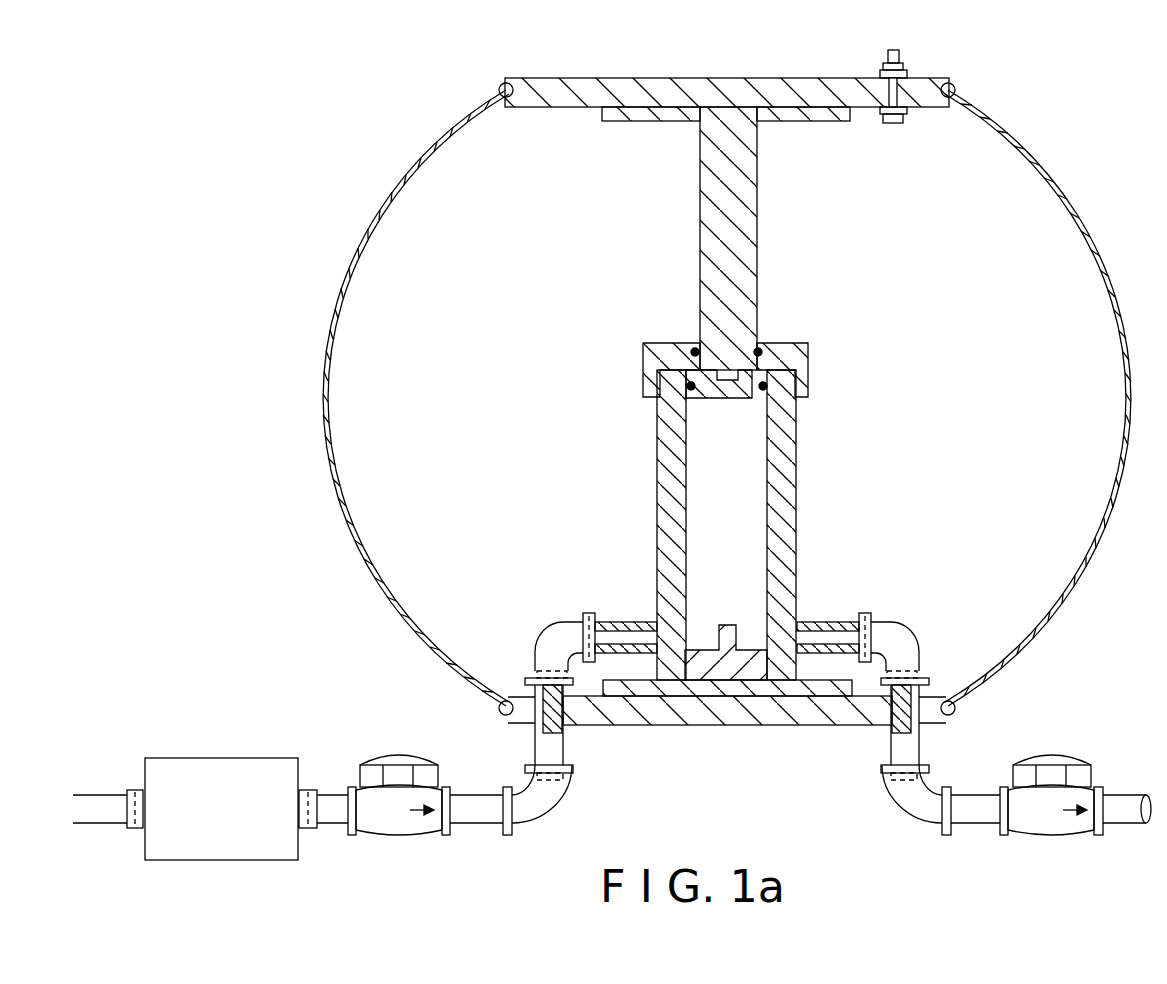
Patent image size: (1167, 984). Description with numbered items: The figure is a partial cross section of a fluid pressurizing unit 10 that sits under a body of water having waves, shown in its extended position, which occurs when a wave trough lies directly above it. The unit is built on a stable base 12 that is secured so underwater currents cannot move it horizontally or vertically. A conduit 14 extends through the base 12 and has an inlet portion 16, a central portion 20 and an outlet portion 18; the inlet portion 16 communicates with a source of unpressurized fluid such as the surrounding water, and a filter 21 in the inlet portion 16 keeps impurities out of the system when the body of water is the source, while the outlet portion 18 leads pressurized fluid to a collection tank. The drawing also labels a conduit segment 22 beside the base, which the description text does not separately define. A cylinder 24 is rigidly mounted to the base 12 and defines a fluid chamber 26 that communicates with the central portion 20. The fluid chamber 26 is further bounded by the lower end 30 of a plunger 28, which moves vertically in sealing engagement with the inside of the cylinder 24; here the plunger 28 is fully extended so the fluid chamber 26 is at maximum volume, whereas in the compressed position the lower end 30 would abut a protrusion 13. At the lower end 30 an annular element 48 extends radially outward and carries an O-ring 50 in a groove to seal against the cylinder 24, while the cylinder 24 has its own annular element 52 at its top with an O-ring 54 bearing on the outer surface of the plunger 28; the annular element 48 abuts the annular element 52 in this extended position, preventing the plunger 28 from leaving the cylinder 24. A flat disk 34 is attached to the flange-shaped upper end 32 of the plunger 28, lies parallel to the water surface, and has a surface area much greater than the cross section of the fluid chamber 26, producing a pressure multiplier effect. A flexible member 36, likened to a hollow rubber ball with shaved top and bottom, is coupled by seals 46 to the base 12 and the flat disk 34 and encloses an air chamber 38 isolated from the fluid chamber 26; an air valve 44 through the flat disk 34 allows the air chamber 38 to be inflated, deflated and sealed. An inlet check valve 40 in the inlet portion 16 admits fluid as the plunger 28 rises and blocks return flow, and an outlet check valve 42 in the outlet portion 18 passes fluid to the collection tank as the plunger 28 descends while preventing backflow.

The fluid pressurizing unit 10 is at (368, 134).
The stable base 12 is at (730, 712).
The protrusion 13 is at (732, 627).
The conduit 14 is at (886, 800).
The inlet portion 16 is at (330, 798).
The outlet portion 18 is at (1118, 812).
The central portion 20 is at (830, 632).
The filter 21 is at (207, 757).
The inlet conduit 22 is at (534, 676).
The cylinder 24 is at (800, 542).
The fluid chamber 26 is at (706, 492).
The plunger 28 is at (760, 282).
The lower end 30 is at (722, 400).
The upper end 32 is at (790, 122).
The flat disk 34 is at (722, 92).
The flexible member 36 is at (1008, 142).
The air chamber 38 is at (491, 286).
The inlet check valve 40 is at (402, 836).
The outlet check valve 42 is at (1040, 836).
The air valve 44 is at (903, 57).
The seals 46 is at (956, 84).
The annular element 48 is at (768, 397).
The O-ring 50 is at (805, 383).
The annular element 52 is at (660, 352).
The O-ring 54 is at (782, 350).